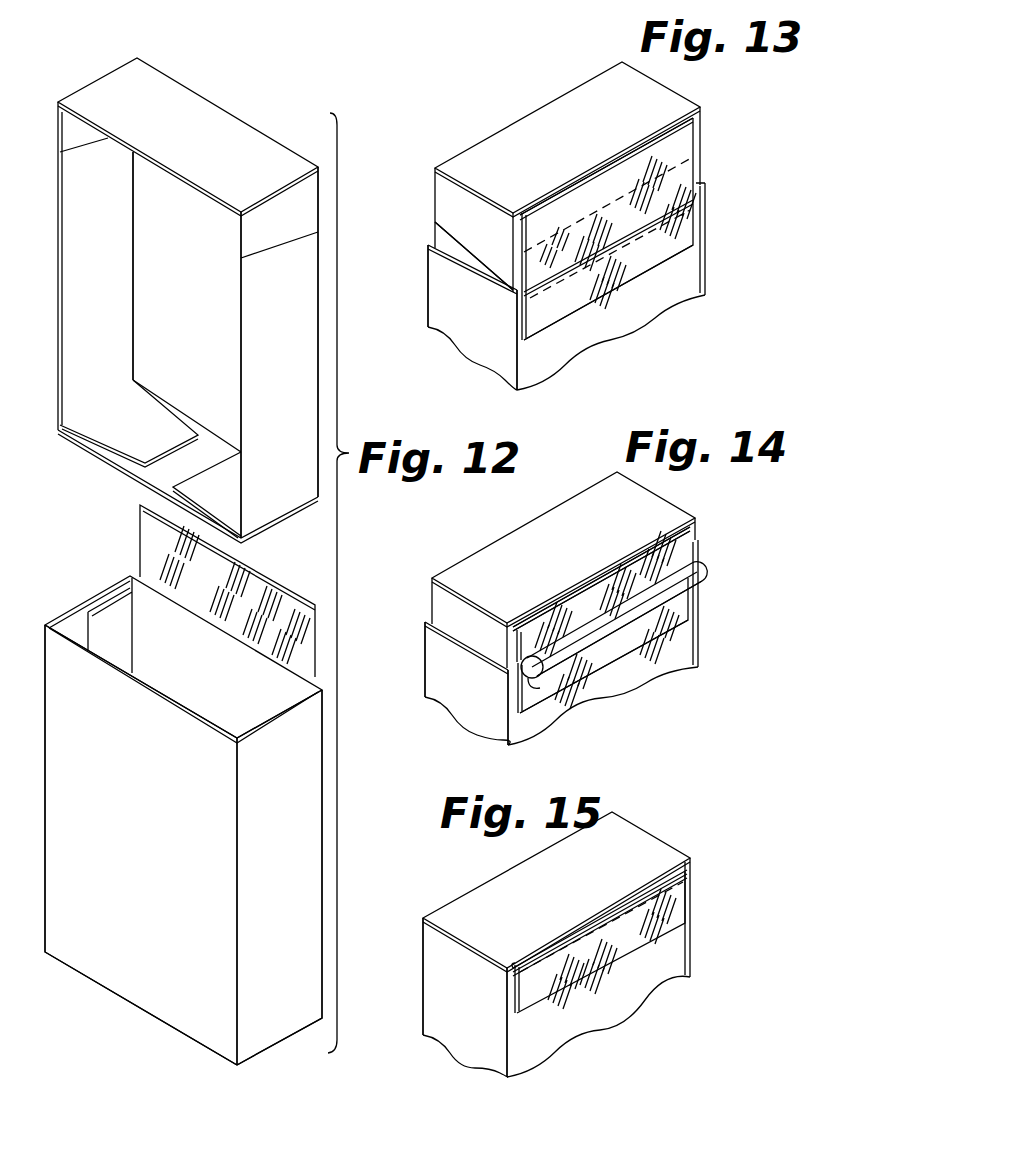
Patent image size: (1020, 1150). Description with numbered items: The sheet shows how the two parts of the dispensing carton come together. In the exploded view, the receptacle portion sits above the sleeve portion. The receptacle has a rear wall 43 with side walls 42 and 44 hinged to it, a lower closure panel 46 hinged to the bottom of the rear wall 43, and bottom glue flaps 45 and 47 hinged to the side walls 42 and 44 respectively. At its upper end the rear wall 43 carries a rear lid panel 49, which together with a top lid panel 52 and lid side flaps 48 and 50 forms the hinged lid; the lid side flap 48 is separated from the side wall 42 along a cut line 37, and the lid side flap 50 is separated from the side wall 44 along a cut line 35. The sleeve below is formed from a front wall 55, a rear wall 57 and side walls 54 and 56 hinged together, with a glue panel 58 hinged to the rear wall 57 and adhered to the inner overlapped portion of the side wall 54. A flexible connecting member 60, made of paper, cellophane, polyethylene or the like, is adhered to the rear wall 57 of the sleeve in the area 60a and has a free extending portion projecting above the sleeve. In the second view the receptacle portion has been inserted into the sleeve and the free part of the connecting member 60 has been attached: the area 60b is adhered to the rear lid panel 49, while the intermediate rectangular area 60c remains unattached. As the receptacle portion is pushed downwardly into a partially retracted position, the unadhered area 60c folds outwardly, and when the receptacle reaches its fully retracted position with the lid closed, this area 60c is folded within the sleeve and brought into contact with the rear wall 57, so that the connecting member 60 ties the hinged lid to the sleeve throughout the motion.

In FIG. 12, the cut line 35 is at (260, 257).
In FIG. 13, the cut line 35 is at (452, 237).
In FIG. 12, the cut line 37 is at (85, 145).
In FIG. 12, the side wall 42 is at (78, 304).
In FIG. 12, the rear wall 43 is at (173, 269).
In FIG. 12, the side wall 44 is at (263, 383).
In FIG. 13, the side wall 44 is at (448, 238).
In FIG. 12, the bottom glue flap 45 is at (113, 429).
In FIG. 12, the lower closure panel 46 is at (153, 472).
In FIG. 12, the bottom glue flap 47 is at (220, 482).
In FIG. 12, the lid side flap 48 is at (75, 130).
In FIG. 13, the rear lid panel 49 is at (693, 163).
In FIG. 14, the rear lid panel 49 is at (630, 560).
In FIG. 12, the lid side flap 50 is at (273, 233).
In FIG. 13, the lid side flap 50 is at (471, 239).
In FIG. 14, the lid side flap 50 is at (450, 610).
In FIG. 12, the top lid panel 52 is at (161, 136).
In FIG. 13, the top lid panel 52 is at (543, 144).
In FIG. 14, the top lid panel 52 is at (513, 569).
In FIG. 15, the top lid panel 52 is at (528, 899).
In FIG. 12, the side wall 54 is at (85, 605).
In FIG. 13, the side wall 54 is at (706, 265).
In FIG. 14, the side wall 54 is at (698, 628).
In FIG. 15, the side wall 54 is at (693, 943).
In FIG. 12, the front wall 55 is at (121, 821).
In FIG. 12, the side wall 56 is at (265, 833).
In FIG. 13, the side wall 56 is at (455, 318).
In FIG. 14, the side wall 56 is at (451, 694).
In FIG. 15, the side wall 56 is at (451, 1019).
In FIG. 12, the rear wall 57 is at (183, 681).
In FIG. 13, the rear wall 57 is at (643, 315).
In FIG. 14, the rear wall 57 is at (668, 668).
In FIG. 15, the rear wall 57 is at (605, 996).
In FIG. 12, the glue panel 58 is at (96, 643).
In FIG. 12, the flexible connecting member 60 is at (268, 580).
In FIG. 13, the flexible connecting member 60 is at (613, 274).
In FIG. 14, the flexible connecting member 60 is at (697, 575).
In FIG. 15, the flexible connecting member 60 is at (674, 868).
In FIG. 13, the adhered area of connecting member 60a is at (565, 305).
In FIG. 14, the adhered area of connecting member 60a is at (600, 652).
In FIG. 15, the adhered area of connecting member 60a is at (677, 902).
In FIG. 13, the attached area of connecting member 60b is at (643, 160).
In FIG. 14, the attached area of connecting member 60b is at (672, 553).
In FIG. 13, the unattached intermediate area of connecting member 60c is at (677, 182).
In FIG. 14, the unattached intermediate area of connecting member 60c is at (677, 583).